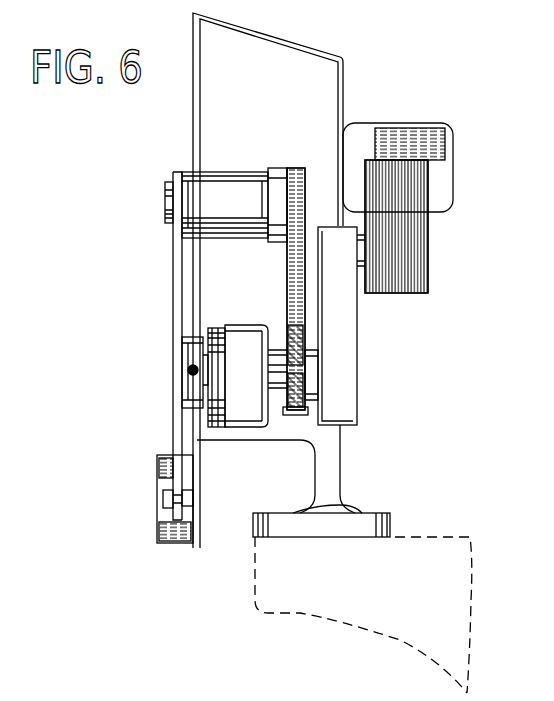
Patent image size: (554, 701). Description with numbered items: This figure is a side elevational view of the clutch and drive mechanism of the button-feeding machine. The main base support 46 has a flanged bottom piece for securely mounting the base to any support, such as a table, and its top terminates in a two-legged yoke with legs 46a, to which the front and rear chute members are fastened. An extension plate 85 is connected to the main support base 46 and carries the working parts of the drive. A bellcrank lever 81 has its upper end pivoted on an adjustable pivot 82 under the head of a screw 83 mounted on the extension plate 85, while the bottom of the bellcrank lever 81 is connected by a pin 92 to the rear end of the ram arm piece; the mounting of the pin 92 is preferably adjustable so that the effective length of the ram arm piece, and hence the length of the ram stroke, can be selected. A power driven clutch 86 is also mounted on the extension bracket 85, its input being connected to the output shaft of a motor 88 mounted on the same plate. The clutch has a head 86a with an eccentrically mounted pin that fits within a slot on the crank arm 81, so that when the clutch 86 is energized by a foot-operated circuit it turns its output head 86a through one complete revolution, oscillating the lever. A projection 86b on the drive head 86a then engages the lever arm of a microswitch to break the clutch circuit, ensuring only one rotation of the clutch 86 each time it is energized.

The yoke legs 46a is at (283, 58).
The bellcrank lever 81 is at (173, 284).
The adjustable pivot 82 is at (216, 190).
The screw 83 is at (165, 192).
The extension plate 85 is at (290, 167).
The power driven clutch 86 is at (240, 420).
The clutch head 86a is at (192, 350).
The projection 86b is at (186, 370).
The motor 88 is at (405, 258).
The main base support 46 is at (325, 472).
The pin 92 is at (163, 496).